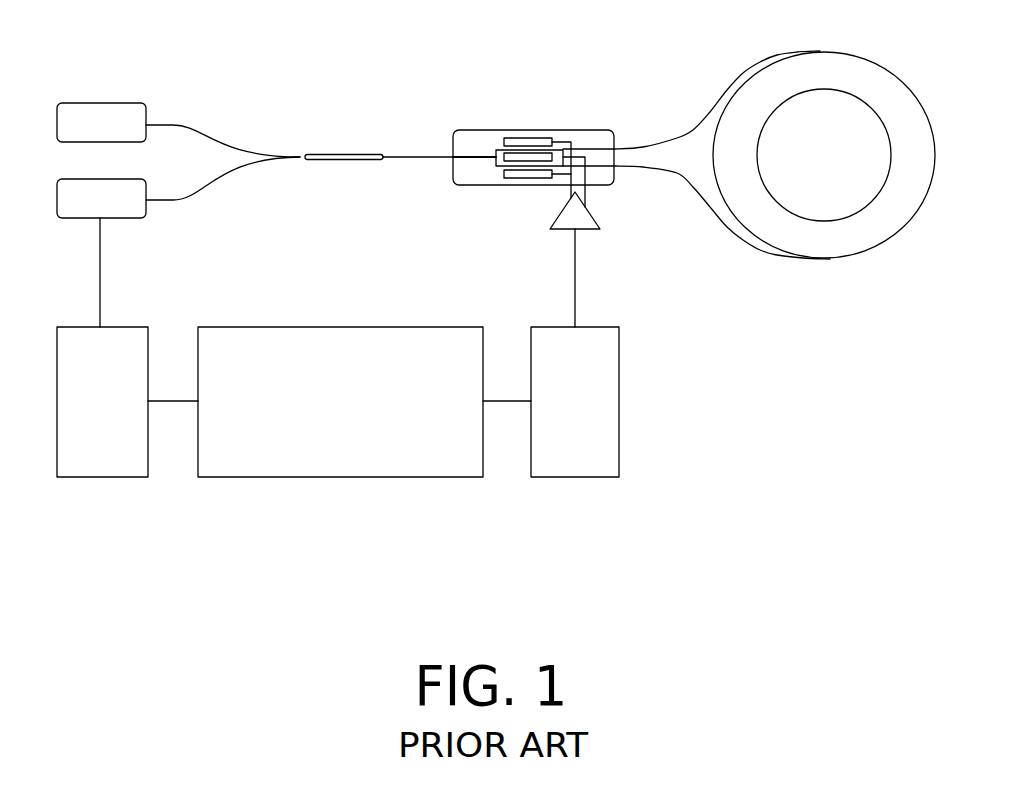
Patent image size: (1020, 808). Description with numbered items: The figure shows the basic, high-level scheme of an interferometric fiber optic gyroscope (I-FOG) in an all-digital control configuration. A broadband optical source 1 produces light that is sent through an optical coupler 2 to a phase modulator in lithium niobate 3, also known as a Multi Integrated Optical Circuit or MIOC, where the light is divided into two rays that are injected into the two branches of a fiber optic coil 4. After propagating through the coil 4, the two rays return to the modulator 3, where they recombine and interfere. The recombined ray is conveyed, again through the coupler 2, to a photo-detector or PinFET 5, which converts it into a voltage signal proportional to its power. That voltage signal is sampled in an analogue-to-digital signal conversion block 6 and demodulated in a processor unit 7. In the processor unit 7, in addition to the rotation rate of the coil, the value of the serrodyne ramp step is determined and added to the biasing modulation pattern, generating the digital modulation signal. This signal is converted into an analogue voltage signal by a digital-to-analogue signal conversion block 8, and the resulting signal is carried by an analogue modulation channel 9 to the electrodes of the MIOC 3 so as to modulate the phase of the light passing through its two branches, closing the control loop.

The broadband optical source 1 is at (88, 103).
The optical coupler 2 is at (303, 151).
The phase modulator in lithium niobate (MIOC) 3 is at (480, 130).
The fiber optic coil 4 is at (847, 259).
The photo-detector (PinFET) 5 is at (57, 197).
The analogue-to-digital signal conversion block 6 is at (57, 392).
The processor unit 7 is at (300, 327).
The digital-to-analogue signal conversion block 8 is at (619, 418).
The modulation channel 9 is at (548, 224).